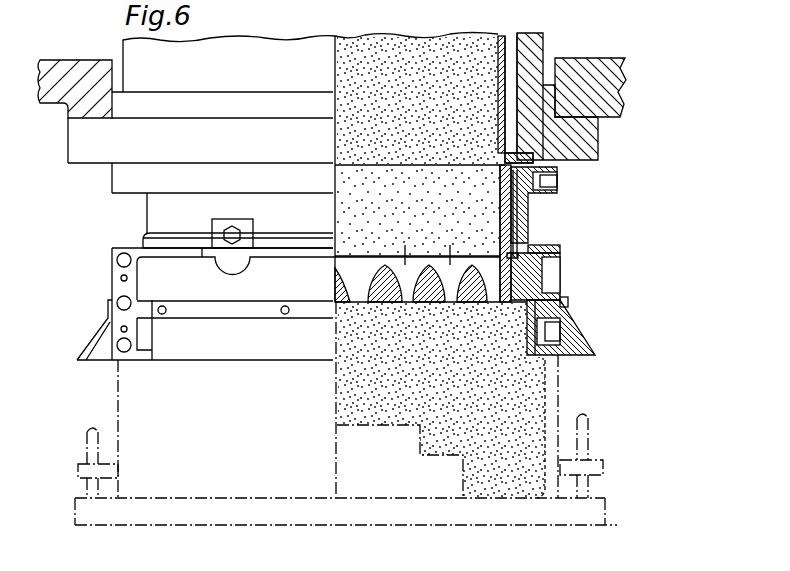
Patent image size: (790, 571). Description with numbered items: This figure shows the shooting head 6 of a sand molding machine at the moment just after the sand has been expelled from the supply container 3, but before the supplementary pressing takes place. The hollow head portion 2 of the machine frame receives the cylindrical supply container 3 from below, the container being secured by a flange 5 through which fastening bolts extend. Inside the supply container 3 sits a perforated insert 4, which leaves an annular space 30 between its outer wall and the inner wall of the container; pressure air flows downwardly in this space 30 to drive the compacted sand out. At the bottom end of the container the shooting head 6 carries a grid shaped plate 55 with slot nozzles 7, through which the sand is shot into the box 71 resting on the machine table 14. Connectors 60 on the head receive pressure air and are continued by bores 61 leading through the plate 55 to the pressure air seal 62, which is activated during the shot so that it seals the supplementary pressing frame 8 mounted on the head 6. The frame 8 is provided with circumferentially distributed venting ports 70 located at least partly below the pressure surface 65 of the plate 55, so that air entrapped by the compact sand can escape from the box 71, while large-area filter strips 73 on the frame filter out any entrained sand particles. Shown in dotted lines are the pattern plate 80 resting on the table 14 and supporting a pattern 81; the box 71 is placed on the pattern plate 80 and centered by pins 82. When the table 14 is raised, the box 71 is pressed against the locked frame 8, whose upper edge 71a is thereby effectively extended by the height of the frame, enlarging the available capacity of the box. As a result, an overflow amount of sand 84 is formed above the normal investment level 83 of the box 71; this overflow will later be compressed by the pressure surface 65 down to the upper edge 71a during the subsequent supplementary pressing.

The head portion 2 is at (608, 75).
The supply container 3 is at (540, 47).
The perforated insert 4 is at (505, 97).
The flange 5 is at (590, 138).
The shooting head 6 is at (528, 208).
The slot nozzles 7 is at (345, 262).
The supplementary pressing frame 8 is at (552, 253).
The machine table 14 is at (592, 520).
The annular space 30 is at (508, 50).
The grid shaped plate 55 is at (393, 262).
The connectors 60 is at (560, 180).
The bores 61 is at (512, 203).
The pressure air seal 62 is at (546, 277).
The pressure surface 65 is at (387, 303).
The venting ports 70 is at (560, 326).
The box 71 is at (550, 395).
The upper edge 71a is at (558, 357).
The filter strips 73 is at (568, 302).
The pattern plate 80 is at (503, 512).
The pattern 81 is at (393, 470).
The pins 82 is at (88, 440).
The normal investment level 83 is at (513, 470).
The overflow amount of sand 84 is at (510, 368).